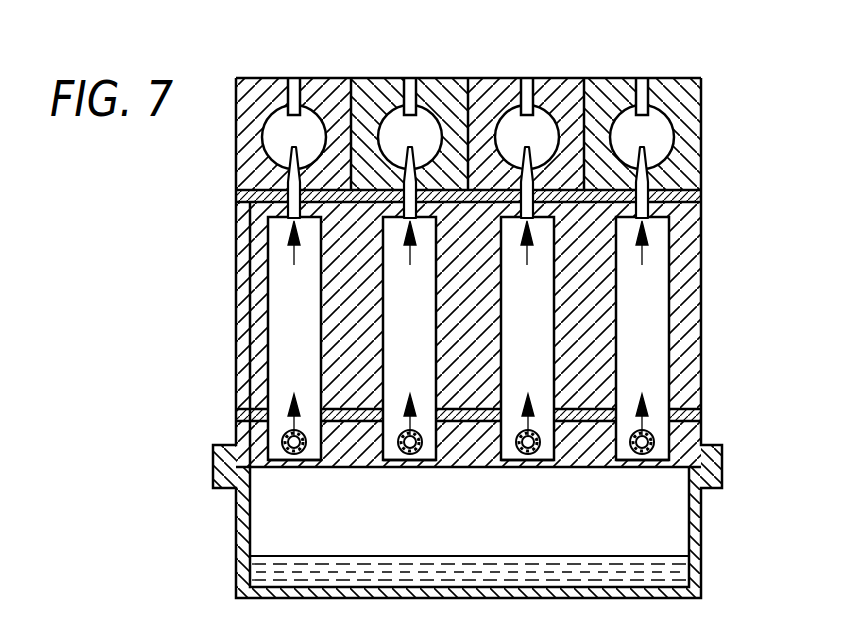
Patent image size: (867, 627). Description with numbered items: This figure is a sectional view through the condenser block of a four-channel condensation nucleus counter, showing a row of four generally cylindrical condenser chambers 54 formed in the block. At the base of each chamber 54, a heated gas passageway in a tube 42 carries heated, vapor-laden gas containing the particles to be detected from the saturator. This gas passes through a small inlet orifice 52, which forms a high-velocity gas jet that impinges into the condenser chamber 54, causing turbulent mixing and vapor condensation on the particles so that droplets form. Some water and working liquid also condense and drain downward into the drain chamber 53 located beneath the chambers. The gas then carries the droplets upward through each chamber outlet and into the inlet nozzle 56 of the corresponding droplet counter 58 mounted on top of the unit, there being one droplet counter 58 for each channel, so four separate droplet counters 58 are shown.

The tubes 42 is at (281, 458).
The inlet orifice 52 is at (281, 458).
The drain chamber 53 is at (703, 503).
The condenser chambers 54 is at (398, 297).
The inlet nozzle 56 is at (522, 162).
The droplet counters 58 is at (371, 80).